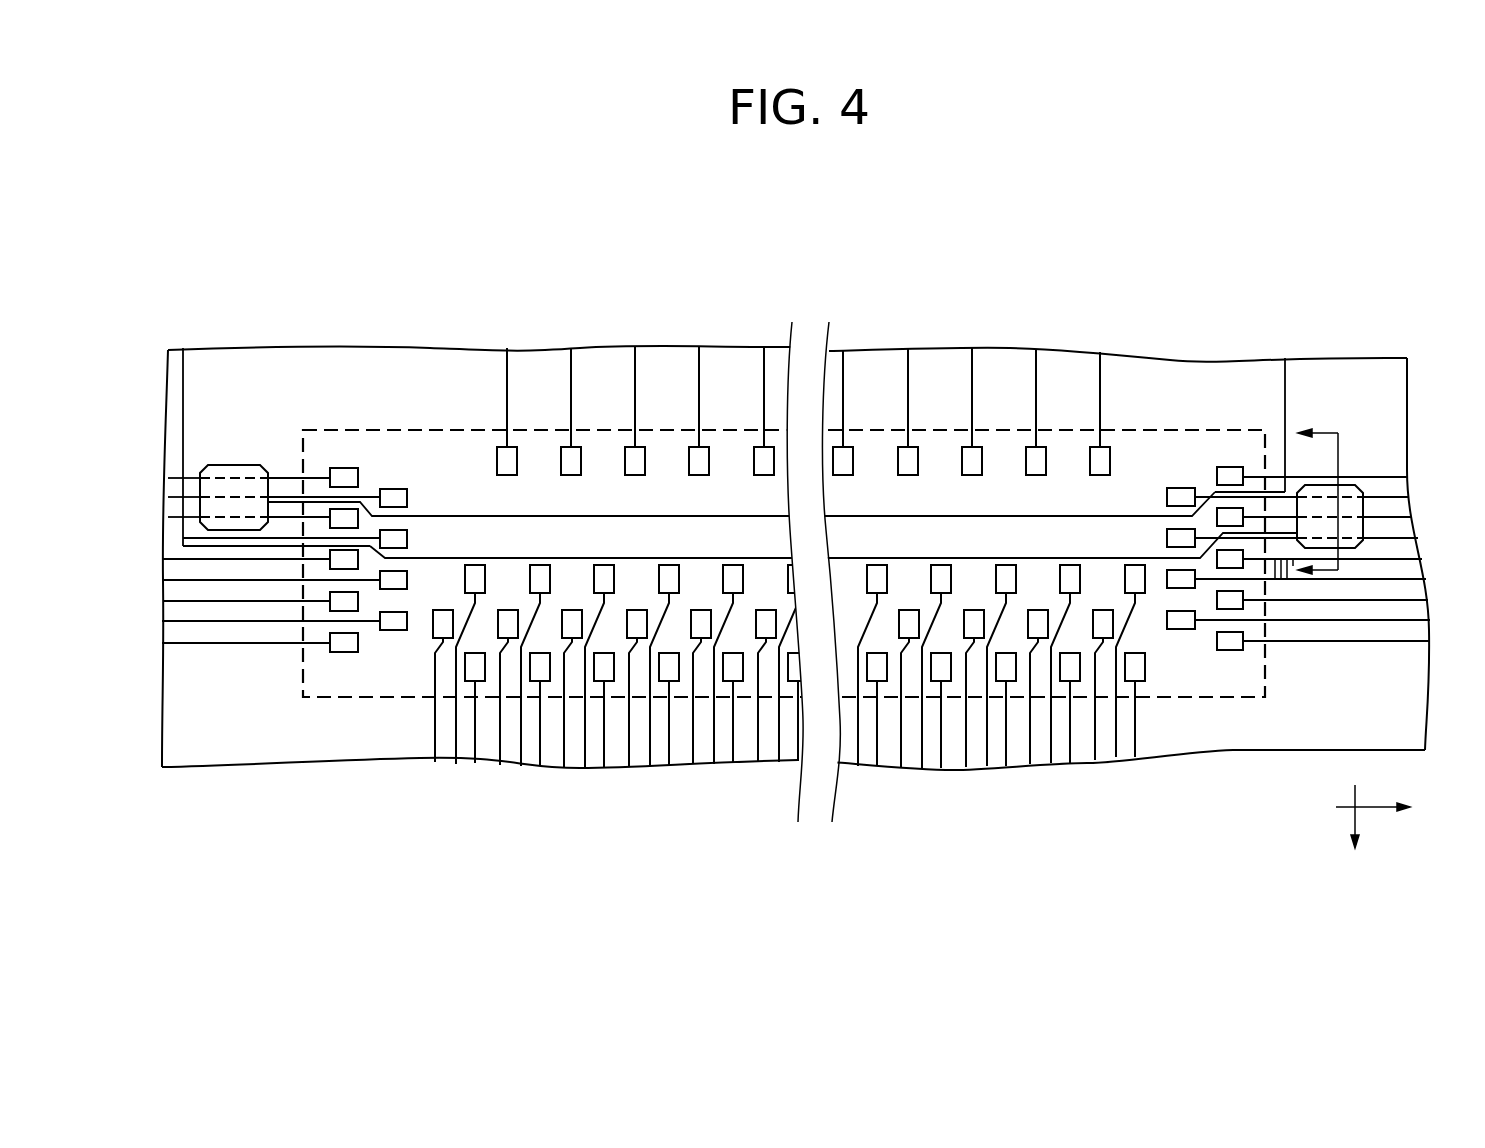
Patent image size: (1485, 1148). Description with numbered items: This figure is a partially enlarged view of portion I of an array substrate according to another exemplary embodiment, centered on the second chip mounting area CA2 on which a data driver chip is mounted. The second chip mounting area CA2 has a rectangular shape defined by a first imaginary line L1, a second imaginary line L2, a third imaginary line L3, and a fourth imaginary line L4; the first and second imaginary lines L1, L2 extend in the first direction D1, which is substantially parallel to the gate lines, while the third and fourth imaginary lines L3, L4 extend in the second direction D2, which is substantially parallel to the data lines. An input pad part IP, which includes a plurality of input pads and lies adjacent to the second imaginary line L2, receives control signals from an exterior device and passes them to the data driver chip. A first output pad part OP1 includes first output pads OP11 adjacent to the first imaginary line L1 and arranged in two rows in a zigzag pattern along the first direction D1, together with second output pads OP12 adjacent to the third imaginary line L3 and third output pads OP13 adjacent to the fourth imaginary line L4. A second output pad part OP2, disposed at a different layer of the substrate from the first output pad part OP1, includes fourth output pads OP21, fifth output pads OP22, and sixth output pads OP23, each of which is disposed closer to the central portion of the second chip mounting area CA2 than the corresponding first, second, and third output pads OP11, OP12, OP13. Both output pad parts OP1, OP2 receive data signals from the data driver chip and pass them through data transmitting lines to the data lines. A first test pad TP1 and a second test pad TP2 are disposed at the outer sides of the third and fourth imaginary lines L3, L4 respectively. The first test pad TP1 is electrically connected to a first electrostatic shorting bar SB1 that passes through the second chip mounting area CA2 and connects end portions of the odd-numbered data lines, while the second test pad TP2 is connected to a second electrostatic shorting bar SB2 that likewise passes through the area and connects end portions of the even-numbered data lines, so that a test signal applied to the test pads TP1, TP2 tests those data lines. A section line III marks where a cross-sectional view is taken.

The portion I is at (1258, 362).
The second chip mounting area CA2 is at (1196, 452).
The first test pad TP1 is at (236, 465).
The second test pad TP2 is at (1347, 485).
The first electrostatic shorting bar SB1 is at (1285, 386).
The second electrostatic shorting bar SB2 is at (186, 374).
The first imaginary line L1 is at (1087, 697).
The second imaginary line L2 is at (735, 430).
The third imaginary line L3 is at (303, 592).
The fourth imaginary line L4 is at (1265, 613).
The line III-III' III is at (1306, 490).
The input pad part IP is at (497, 461).
The first output pad part OP1 is at (1180, 875).
The first output pads OP11 is at (679, 667).
The second output pads OP12 is at (344, 652).
The third output pads OP13 is at (1230, 650).
The second output pad part OP2 is at (1117, 268).
The fourth output pads OP21 is at (604, 565).
The fifth output pads OP22 is at (407, 497).
The sixth output pads OP23 is at (1167, 497).
The first direction D1 is at (1388, 808).
The second direction D2 is at (1353, 836).